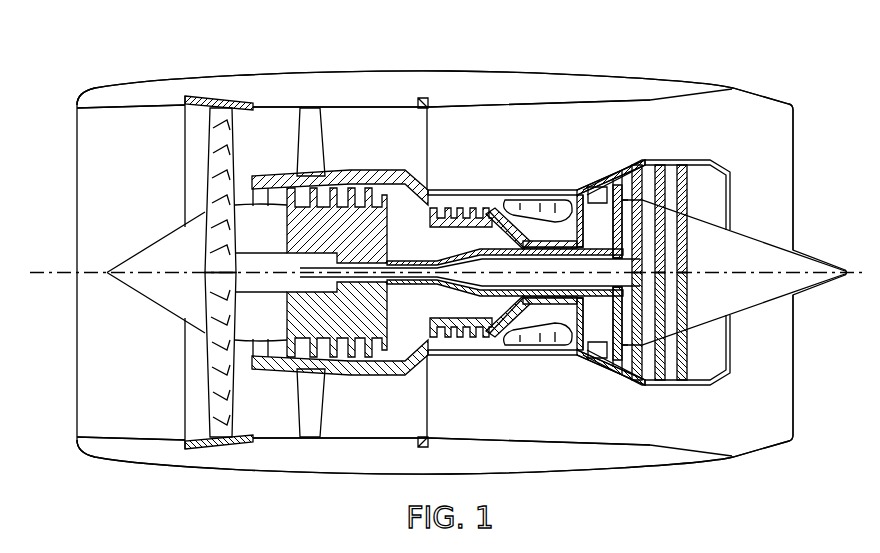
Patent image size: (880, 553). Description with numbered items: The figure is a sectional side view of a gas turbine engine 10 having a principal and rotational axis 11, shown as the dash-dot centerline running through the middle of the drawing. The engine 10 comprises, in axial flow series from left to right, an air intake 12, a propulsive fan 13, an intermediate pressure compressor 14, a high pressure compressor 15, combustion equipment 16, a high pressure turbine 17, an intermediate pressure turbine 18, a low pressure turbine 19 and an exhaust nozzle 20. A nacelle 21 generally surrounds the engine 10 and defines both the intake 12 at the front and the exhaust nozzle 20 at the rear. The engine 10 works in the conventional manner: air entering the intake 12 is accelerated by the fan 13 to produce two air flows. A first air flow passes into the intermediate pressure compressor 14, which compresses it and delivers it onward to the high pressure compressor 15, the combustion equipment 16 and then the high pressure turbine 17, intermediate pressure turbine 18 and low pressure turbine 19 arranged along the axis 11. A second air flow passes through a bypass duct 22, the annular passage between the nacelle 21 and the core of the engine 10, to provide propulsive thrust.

The gas turbine engine 10 is at (63, 118).
The principal and rotational axis 11 is at (62, 270).
The air intake 12 is at (158, 107).
The propulsive fan 13 is at (205, 405).
The intermediate pressure compressor 14 is at (327, 322).
The high pressure compressor 15 is at (458, 202).
The combustion equipment 16 is at (535, 340).
The high pressure turbine 17 is at (578, 345).
The intermediate pressure turbine 18 is at (612, 177).
The low pressure turbine 19 is at (630, 377).
The exhaust nozzle 20 is at (797, 412).
The nacelle 21 is at (475, 92).
The bypass duct 22 is at (370, 148).